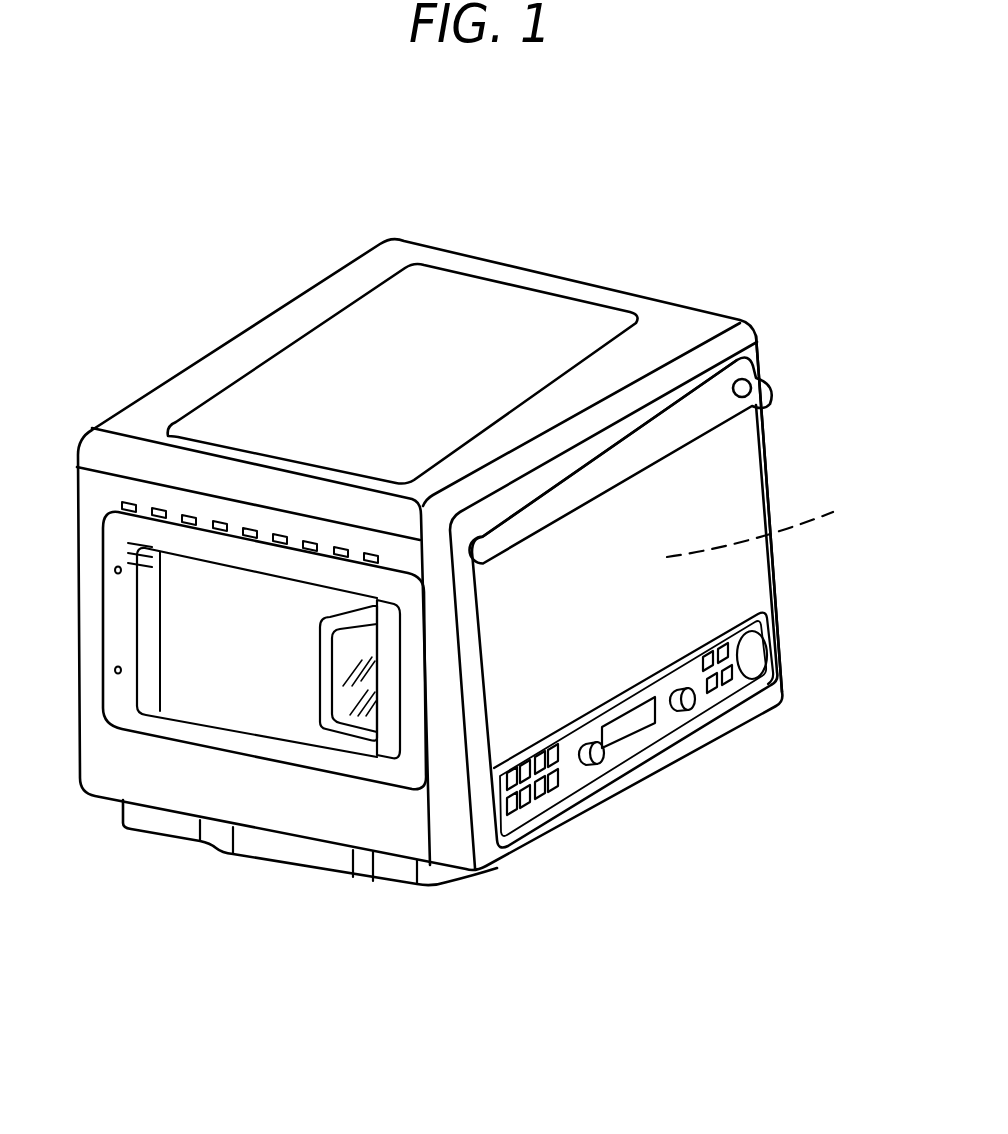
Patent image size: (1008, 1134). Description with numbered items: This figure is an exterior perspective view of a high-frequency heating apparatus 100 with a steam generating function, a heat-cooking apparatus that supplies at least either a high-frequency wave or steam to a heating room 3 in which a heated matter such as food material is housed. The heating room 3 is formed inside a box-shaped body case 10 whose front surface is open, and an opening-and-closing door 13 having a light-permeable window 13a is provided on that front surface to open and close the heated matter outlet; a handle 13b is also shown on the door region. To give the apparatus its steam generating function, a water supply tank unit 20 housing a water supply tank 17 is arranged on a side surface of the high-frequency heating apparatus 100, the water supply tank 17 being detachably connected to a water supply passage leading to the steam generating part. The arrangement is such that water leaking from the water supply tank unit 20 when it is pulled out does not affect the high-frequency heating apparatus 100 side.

The high-frequency heating apparatus 100 is at (503, 247).
The body case 10 is at (392, 245).
The opening-and-closing door 13 is at (772, 468).
The light-permeable window 13a is at (700, 605).
The handle 13b is at (670, 460).
The heating room 3 is at (760, 525).
The water supply tank unit 20 is at (215, 710).
The water supply tank 17 is at (343, 712).